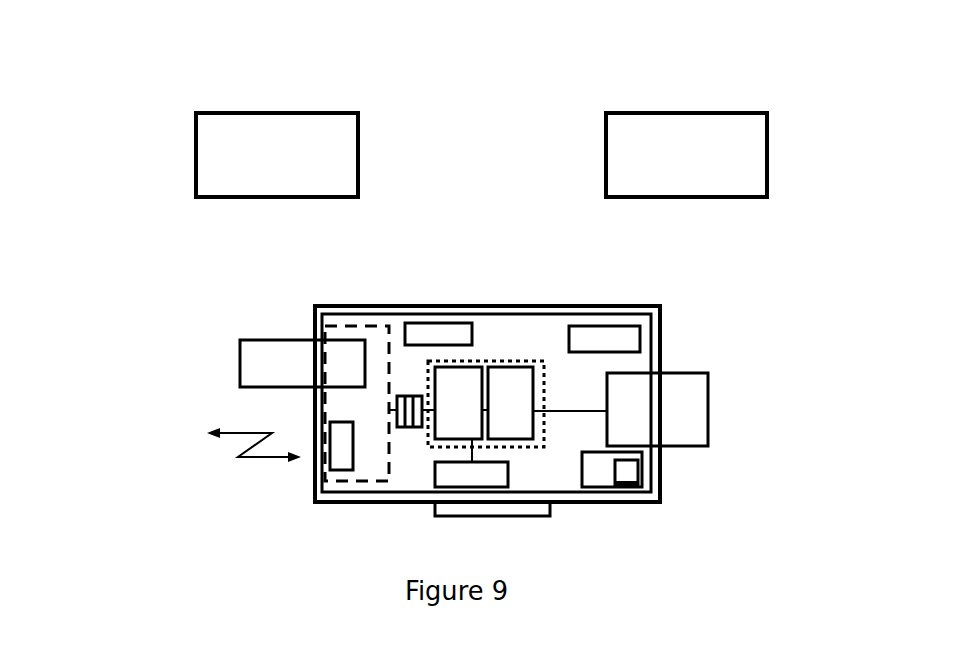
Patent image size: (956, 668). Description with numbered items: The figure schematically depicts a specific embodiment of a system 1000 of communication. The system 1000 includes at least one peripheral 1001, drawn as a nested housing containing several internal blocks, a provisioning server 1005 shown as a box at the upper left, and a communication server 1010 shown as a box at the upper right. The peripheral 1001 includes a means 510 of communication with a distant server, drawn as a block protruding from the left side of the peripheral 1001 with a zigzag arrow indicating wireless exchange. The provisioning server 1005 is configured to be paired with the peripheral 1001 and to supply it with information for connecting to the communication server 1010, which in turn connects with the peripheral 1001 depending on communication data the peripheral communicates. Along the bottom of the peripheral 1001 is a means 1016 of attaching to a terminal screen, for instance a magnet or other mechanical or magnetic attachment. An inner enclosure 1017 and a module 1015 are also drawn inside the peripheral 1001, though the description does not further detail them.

The system of communication 1000 is at (466, 64).
The provisioning server 1005 is at (208, 125).
The communication server 1010 is at (627, 130).
The peripheral 1001 is at (475, 294).
The housing 1017 is at (653, 324).
The means of communication 510 is at (280, 355).
The module 1015 is at (610, 335).
The means of attaching 1016 is at (547, 508).